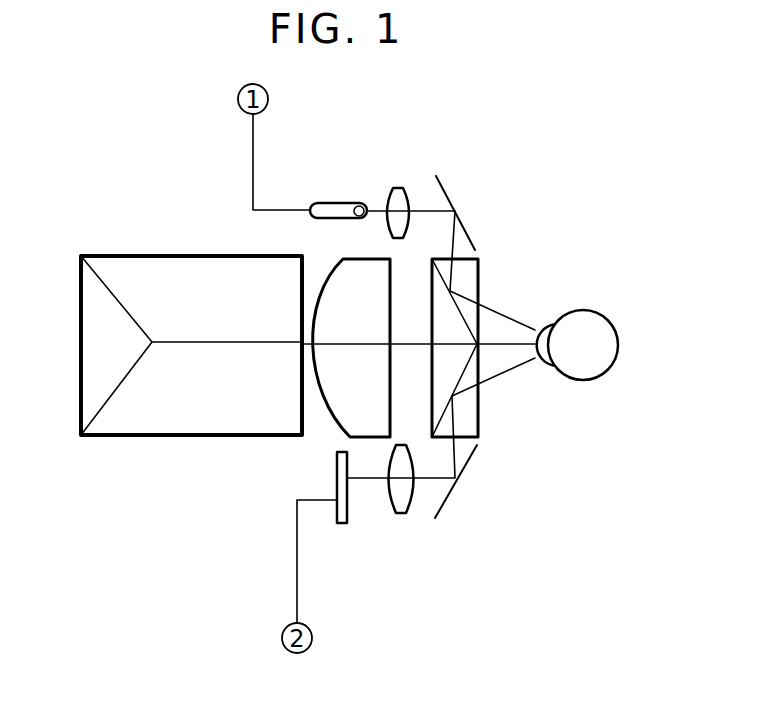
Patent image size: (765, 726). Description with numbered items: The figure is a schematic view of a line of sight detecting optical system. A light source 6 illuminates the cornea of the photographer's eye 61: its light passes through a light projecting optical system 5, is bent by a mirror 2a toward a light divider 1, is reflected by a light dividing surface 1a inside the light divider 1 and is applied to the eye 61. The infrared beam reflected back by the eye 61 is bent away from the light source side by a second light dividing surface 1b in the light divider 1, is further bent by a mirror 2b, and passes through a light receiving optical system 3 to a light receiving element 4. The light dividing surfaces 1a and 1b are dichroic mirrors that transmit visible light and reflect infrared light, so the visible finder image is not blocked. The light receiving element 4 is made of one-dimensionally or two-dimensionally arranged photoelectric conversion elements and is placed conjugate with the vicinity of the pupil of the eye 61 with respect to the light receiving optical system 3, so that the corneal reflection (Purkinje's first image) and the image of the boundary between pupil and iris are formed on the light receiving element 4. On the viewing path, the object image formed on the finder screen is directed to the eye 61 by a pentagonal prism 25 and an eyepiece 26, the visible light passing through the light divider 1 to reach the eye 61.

The light divider 1 is at (464, 353).
The light dividing surface 1a is at (450, 292).
The light dividing surface 1b is at (450, 402).
The mirror 2a is at (448, 198).
The mirror 2b is at (450, 497).
The light receiving optical system 3 is at (401, 513).
The light receiving element 4 is at (342, 523).
The light projecting optical system 5 is at (399, 188).
The light source 6 is at (338, 203).
The pentagonal prism 25 is at (139, 437).
The eyepiece 26 is at (333, 432).
The eye 61 is at (605, 375).